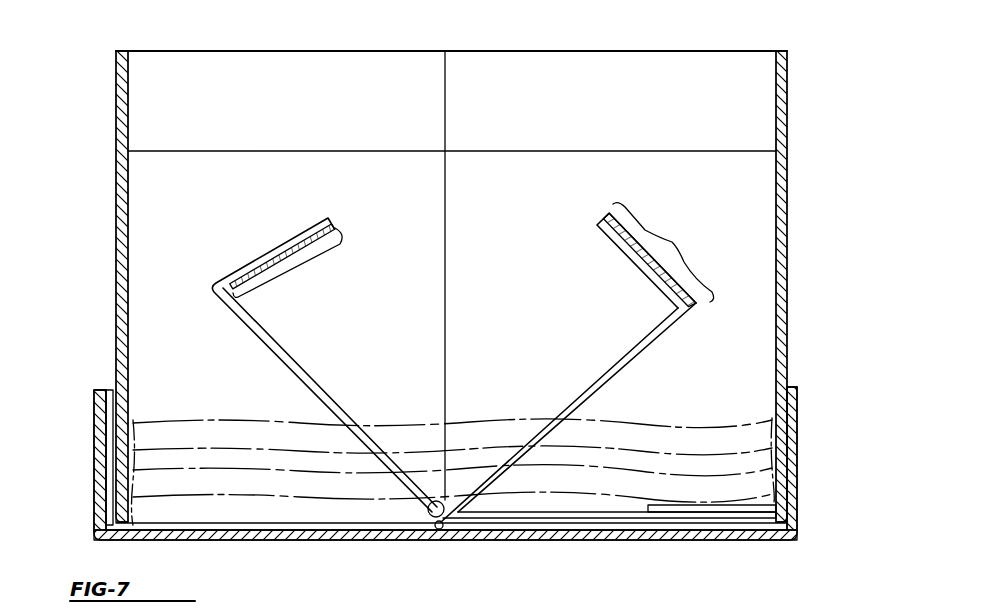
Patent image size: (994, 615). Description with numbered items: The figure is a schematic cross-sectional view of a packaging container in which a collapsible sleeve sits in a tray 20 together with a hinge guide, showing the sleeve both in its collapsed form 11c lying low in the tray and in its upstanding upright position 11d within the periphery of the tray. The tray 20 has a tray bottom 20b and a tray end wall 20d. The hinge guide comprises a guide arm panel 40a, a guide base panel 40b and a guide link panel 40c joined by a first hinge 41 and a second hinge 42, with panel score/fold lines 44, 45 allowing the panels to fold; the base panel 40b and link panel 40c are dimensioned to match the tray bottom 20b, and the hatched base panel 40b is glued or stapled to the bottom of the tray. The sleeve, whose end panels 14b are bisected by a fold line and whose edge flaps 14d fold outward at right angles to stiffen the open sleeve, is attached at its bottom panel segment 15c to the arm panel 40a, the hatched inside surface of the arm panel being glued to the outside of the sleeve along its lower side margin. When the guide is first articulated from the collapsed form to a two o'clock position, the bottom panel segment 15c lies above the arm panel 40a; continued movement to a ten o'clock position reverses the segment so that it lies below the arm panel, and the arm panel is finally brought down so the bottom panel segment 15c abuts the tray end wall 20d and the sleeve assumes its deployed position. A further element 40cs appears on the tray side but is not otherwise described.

The upright position 11d is at (505, 51).
The collapsed form 11c is at (480, 468).
The edge flap 14d is at (298, 117).
The second end panel 14b is at (388, 319).
The bottom panel segment 15c is at (258, 286).
The tray 20 is at (797, 403).
The tray bottom 20b is at (537, 533).
The tray end wall 20d is at (98, 420).
The guide arm panel 40a is at (268, 247).
The guide base panel 40b is at (641, 523).
The guide link panel 40c is at (645, 404).
The tray side strip 40cs is at (793, 447).
The first hinge 41 is at (437, 528).
The second hinge 42 is at (693, 312).
The panel score/fold line 44 is at (432, 503).
The panel score/fold line 45 is at (677, 311).